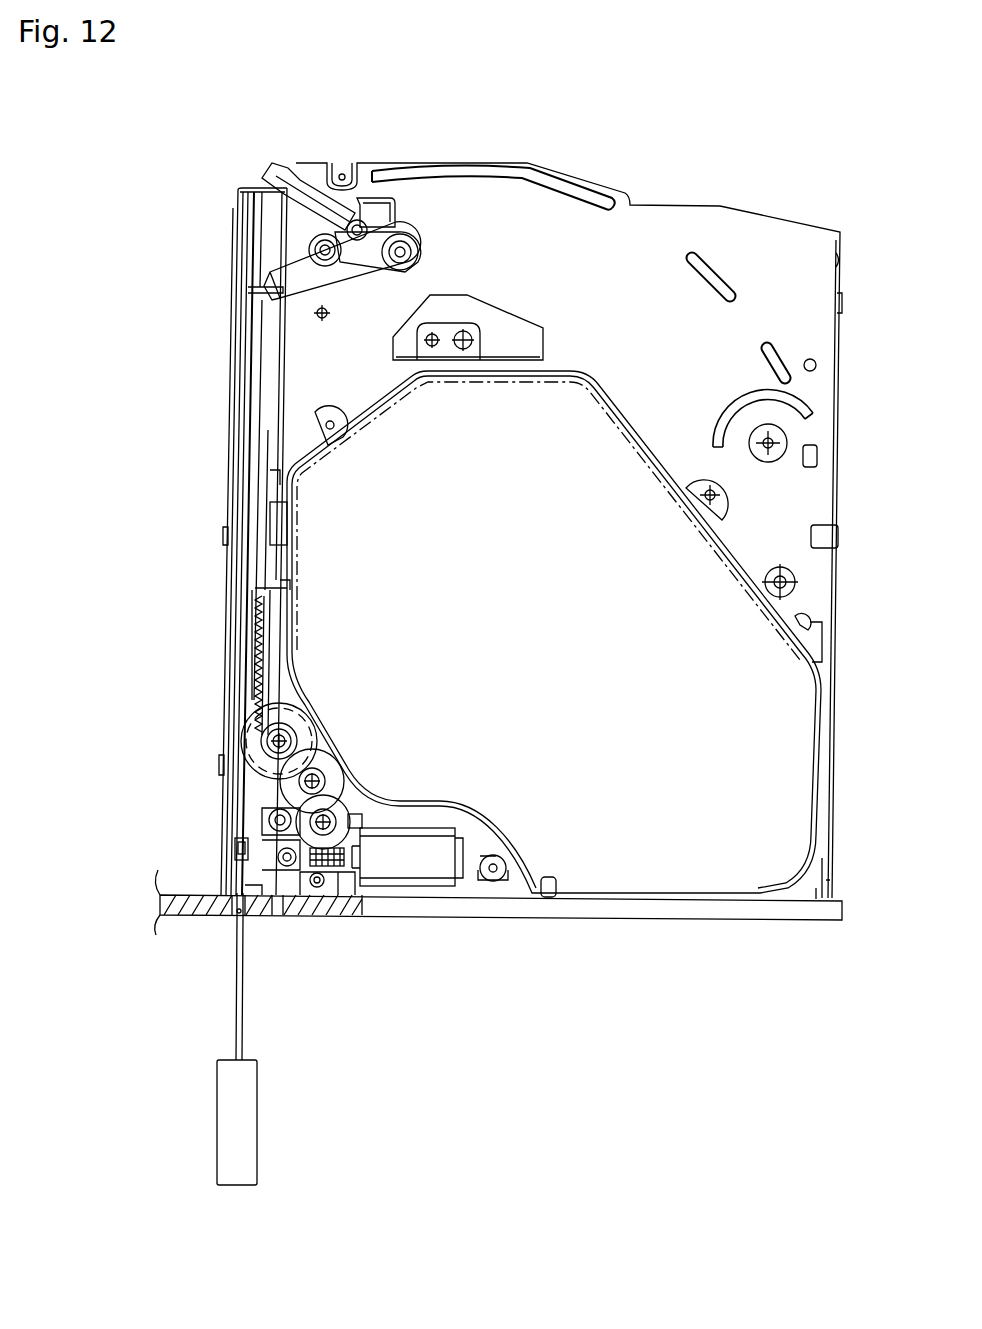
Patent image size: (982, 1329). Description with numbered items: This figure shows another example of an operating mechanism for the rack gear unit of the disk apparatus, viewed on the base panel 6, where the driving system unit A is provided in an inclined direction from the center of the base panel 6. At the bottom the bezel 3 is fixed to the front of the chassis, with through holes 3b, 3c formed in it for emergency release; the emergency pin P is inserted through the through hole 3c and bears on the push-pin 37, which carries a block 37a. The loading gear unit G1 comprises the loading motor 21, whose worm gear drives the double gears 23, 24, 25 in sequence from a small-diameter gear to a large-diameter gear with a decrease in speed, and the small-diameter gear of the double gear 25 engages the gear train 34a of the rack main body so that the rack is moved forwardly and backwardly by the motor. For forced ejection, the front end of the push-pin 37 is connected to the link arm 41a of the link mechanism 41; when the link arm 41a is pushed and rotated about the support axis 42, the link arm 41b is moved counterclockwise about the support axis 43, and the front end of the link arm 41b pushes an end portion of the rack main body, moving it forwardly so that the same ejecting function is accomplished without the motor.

The base panel 6 is at (800, 325).
The driving system unit A is at (550, 397).
The push-pin 37 is at (245, 648).
The gear train 34a is at (268, 606).
The link mechanism 41 is at (412, 208).
The link arm 41b is at (297, 190).
The link arm 41a is at (296, 295).
The support axis 42 is at (332, 268).
The support axis 43 is at (420, 250).
The double gear 25 is at (304, 724).
The double gear 24 is at (326, 772).
The double gear 23 is at (342, 810).
The loading gear unit G1 is at (348, 870).
The loading motor 21 is at (436, 878).
The block 37a is at (236, 848).
The bezel 3 is at (580, 905).
The through hole 3b is at (283, 918).
The through hole 3c is at (237, 915).
The emergency pin P is at (243, 1032).